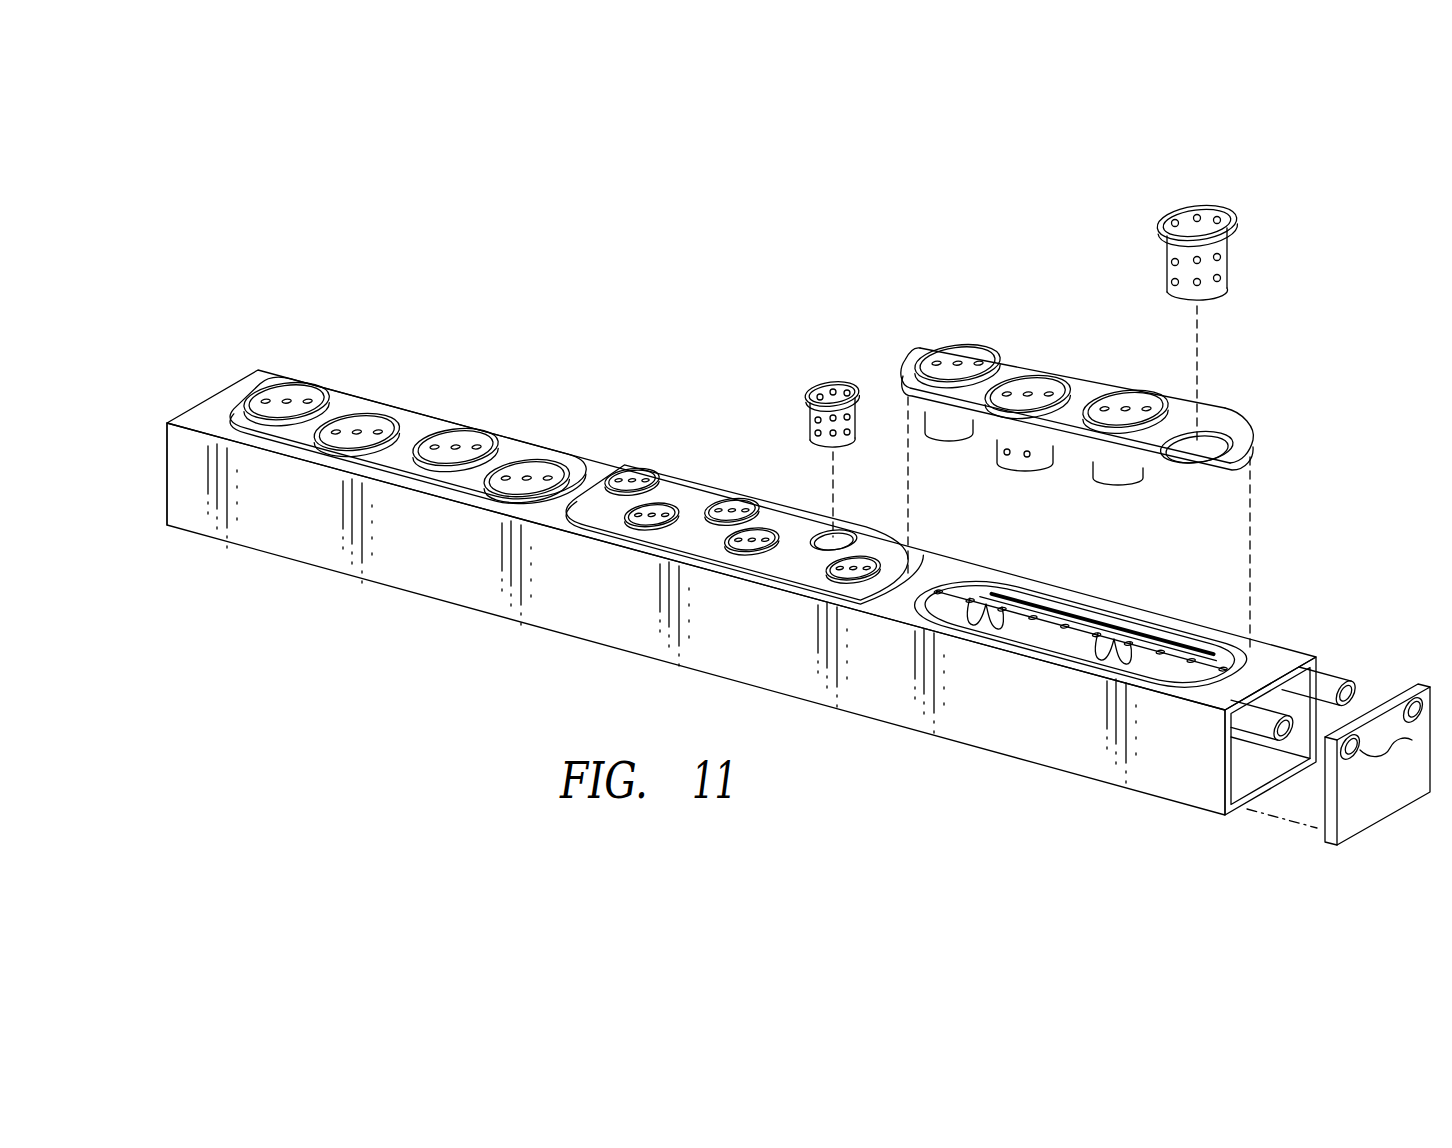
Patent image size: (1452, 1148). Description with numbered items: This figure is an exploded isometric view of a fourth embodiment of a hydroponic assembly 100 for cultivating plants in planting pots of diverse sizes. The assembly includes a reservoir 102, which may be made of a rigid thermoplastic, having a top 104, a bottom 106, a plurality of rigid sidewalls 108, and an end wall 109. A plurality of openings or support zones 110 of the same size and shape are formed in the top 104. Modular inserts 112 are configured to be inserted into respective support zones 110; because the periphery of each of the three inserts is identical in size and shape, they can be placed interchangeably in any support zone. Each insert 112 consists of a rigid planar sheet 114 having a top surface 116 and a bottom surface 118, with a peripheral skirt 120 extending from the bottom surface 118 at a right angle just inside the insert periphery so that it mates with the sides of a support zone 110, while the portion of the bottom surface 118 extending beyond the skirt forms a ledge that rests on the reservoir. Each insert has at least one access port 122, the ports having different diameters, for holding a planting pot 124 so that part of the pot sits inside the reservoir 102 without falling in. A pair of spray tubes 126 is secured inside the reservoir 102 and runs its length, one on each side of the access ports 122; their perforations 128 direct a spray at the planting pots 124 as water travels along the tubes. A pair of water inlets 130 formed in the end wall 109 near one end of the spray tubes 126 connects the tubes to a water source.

The assembly 100 is at (643, 332).
The reservoir 102 is at (450, 567).
The top 104 is at (210, 415).
The bottom 106 is at (1268, 790).
The rigid sidewalls 108 is at (160, 510).
The end wall 109 is at (1367, 805).
The support zones 110 is at (1050, 628).
The modular inserts 112 is at (397, 391).
The rigid planar sheet 114 is at (1092, 385).
The top surface 116 is at (1218, 412).
The bottom surface 118 is at (1067, 450).
The peripheral skirt 120 is at (1193, 480).
The access port 122 is at (1215, 430).
The planting pot 124 is at (514, 455).
The spray tubes 126 is at (1268, 718).
The perforations 128 is at (985, 610).
The water inlets 130 is at (1383, 735).